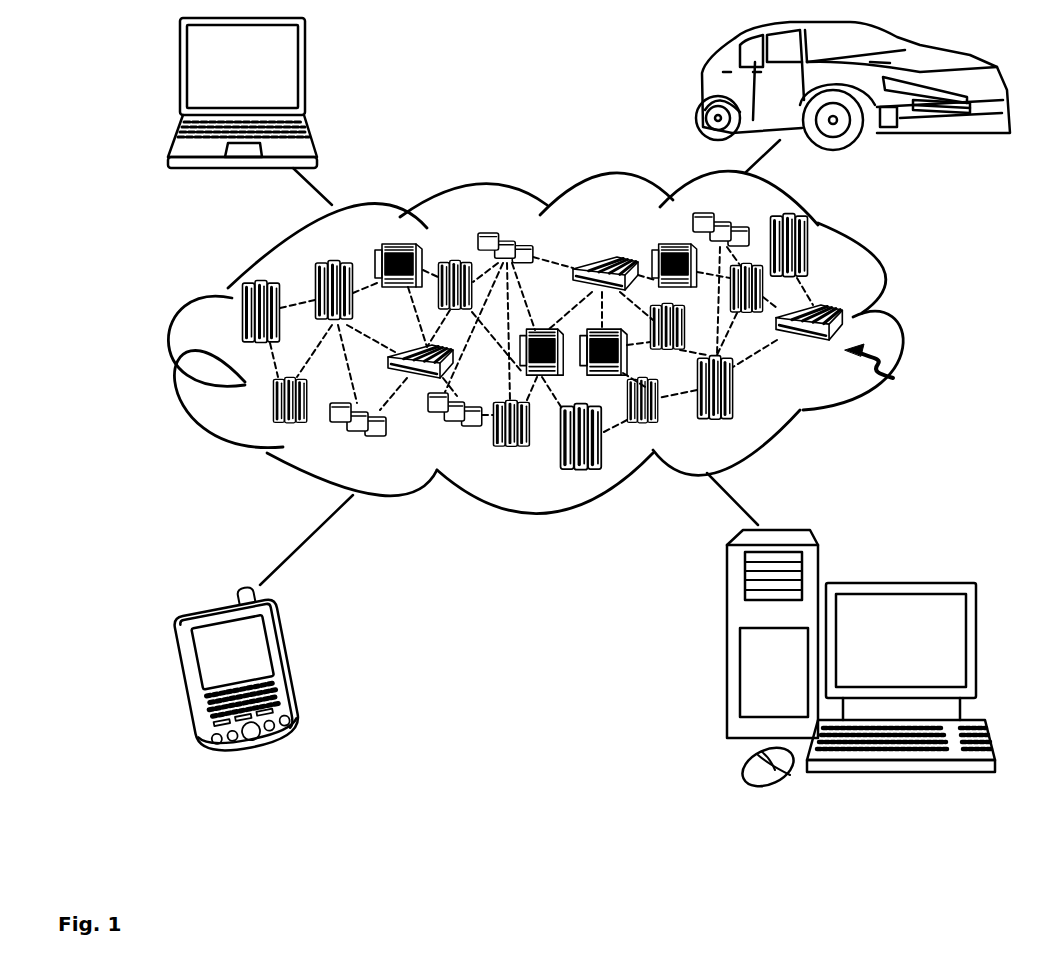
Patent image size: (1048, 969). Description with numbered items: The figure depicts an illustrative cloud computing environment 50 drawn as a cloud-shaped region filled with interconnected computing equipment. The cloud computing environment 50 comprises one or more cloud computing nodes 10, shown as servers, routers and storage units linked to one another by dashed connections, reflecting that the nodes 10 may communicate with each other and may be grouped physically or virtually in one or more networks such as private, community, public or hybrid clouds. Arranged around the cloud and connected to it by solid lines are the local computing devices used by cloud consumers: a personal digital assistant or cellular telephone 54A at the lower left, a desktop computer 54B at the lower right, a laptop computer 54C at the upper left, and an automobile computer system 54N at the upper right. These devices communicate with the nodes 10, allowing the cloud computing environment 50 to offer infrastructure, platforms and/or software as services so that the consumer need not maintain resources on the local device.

The cloud computing node 10 is at (891, 368).
The cloud computing environment 50 is at (900, 323).
The personal digital assistant or cellular telephone 54A is at (297, 668).
The desktop computer 54B is at (898, 583).
The laptop computer 54C is at (305, 73).
The automobile computer system 54N is at (700, 93).